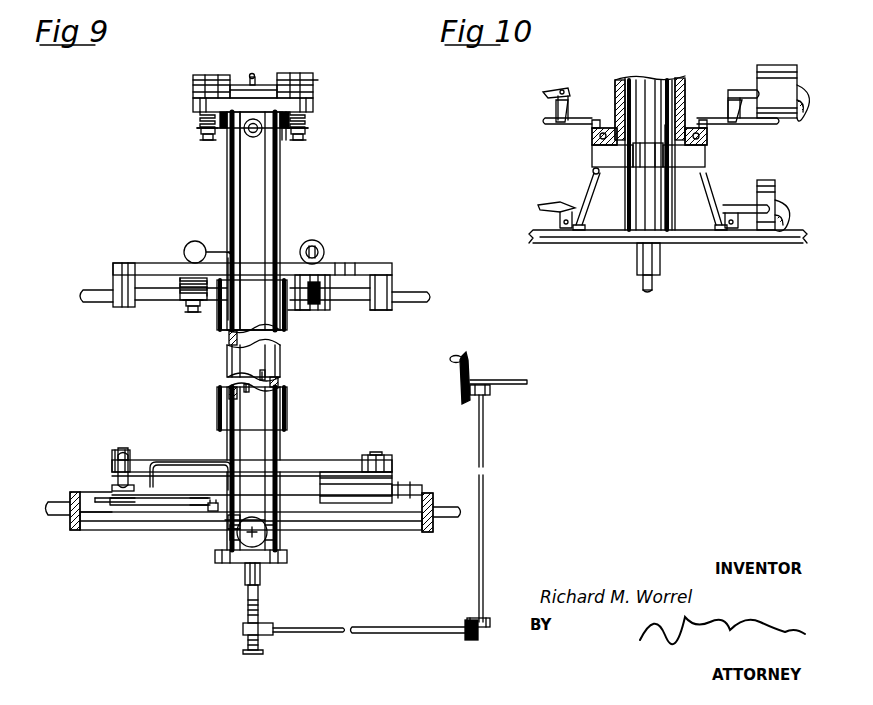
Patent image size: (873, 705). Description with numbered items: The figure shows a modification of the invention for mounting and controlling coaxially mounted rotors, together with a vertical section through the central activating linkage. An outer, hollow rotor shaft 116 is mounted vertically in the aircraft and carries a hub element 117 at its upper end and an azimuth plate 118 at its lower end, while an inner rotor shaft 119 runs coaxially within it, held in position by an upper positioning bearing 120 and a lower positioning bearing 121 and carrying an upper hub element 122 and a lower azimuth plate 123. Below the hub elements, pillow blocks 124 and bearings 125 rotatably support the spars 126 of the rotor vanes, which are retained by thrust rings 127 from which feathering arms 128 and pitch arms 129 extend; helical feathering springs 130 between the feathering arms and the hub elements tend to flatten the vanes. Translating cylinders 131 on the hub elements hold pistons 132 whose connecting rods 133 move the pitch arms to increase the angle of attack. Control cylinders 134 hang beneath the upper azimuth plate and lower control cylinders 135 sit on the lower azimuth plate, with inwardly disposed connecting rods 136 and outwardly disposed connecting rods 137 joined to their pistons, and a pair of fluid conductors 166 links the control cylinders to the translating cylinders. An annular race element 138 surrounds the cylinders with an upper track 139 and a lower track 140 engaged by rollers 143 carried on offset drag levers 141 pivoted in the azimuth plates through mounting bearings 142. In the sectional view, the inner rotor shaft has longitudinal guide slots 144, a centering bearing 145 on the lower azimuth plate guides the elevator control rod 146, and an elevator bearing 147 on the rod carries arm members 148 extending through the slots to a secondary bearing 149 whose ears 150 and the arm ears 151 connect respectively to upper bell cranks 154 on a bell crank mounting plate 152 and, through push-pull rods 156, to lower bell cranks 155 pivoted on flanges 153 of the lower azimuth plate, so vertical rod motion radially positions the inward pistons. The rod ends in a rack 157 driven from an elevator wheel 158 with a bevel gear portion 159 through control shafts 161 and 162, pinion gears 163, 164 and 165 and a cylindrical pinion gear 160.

In FIG. 9, the outer rotor shaft 116 is at (288, 322).
In FIG. 9, the hub element 117 is at (385, 262).
In FIG. 9, the azimuth plate 118 is at (360, 460).
In FIG. 9, the inner rotor shaft 119 is at (240, 198).
In FIG. 10, the inner rotor shaft 119 is at (678, 75).
In FIG. 9, the upper positioning bearing 120 is at (282, 240).
In FIG. 9, the lower positioning bearing 121 is at (300, 470).
In FIG. 9, the upper hub element 122 is at (193, 105).
In FIG. 9, the lower azimuth plate 123 is at (285, 563).
In FIG. 10, the lower azimuth plate 123 is at (735, 245).
In FIG. 9, the pillow blocks 124 is at (228, 140).
In FIG. 9, the bearings 125 is at (248, 138).
In FIG. 9, the spars 126 is at (282, 148).
In FIG. 9, the thrust rings 127 is at (315, 310).
In FIG. 9, the feathering arms 128 is at (308, 130).
In FIG. 9, the pitch arms 129 is at (253, 76).
In FIG. 9, the helical feathering springs 130 is at (305, 120).
In FIG. 9, the translating cylinders 131 is at (313, 80).
In FIG. 9, the pistons 132 is at (205, 82).
In FIG. 9, the connecting rods 133 is at (240, 85).
In FIG. 9, the control cylinders 134 is at (378, 478).
In FIG. 10, the control cylinders 134 is at (778, 65).
In FIG. 9, the lower control cylinders 135 is at (268, 536).
In FIG. 10, the lower control cylinders 135 is at (772, 190).
In FIG. 9, the inwardly disposed connecting rods 136 is at (188, 460).
In FIG. 10, the inwardly disposed connecting rods 136 is at (560, 88).
In FIG. 9, the outwardly disposed connecting rods 137 is at (413, 488).
In FIG. 9, the annular race element 138 is at (430, 534).
In FIG. 9, the upper track 139 is at (72, 494).
In FIG. 9, the lower track 140 is at (95, 522).
In FIG. 9, the offset drag levers 141 is at (115, 470).
In FIG. 9, the mounting bearings 142 is at (130, 455).
In FIG. 9, the rollers 143 is at (95, 498).
In FIG. 10, the longitudinal guide slots 144 is at (665, 132).
In FIG. 9, the centering bearing 145 is at (245, 578).
In FIG. 10, the centering bearing 145 is at (662, 270).
In FIG. 9, the elevator control rod 146 is at (248, 600).
In FIG. 10, the elevator control rod 146 is at (652, 290).
In FIG. 10, the elevator bearing 147 is at (640, 152).
In FIG. 10, the arm members 148 is at (592, 158).
In FIG. 9, the secondary bearing 149 is at (208, 510).
In FIG. 10, the secondary bearing 149 is at (708, 138).
In FIG. 10, the ears 150 is at (595, 125).
In FIG. 10, the ears 151 is at (592, 172).
In FIG. 9, the bell crank mounting plate 152 is at (175, 507).
In FIG. 10, the bell crank mounting plate 152 is at (548, 120).
In FIG. 10, the flanges 153 is at (740, 240).
In FIG. 10, the upper bell cranks 154 is at (570, 100).
In FIG. 10, the lower bell cranks 155 is at (565, 232).
In FIG. 10, the push-pull rods 156 is at (598, 230).
In FIG. 9, the rack 157 is at (243, 640).
In FIG. 9, the elevator wheel 158 is at (468, 358).
In FIG. 9, the bevel gear portion 159 is at (474, 383).
In FIG. 9, the cylindrical pinion gear 160 is at (262, 636).
In FIG. 9, the control shaft 161 is at (398, 627).
In FIG. 9, the control shaft 162 is at (484, 555).
In FIG. 9, the pinion gear 163 is at (470, 640).
In FIG. 9, the pinion gear 164 is at (480, 630).
In FIG. 9, the pinion gear 165 is at (488, 392).
In FIG. 9, the fluid conductors 166 is at (270, 388).